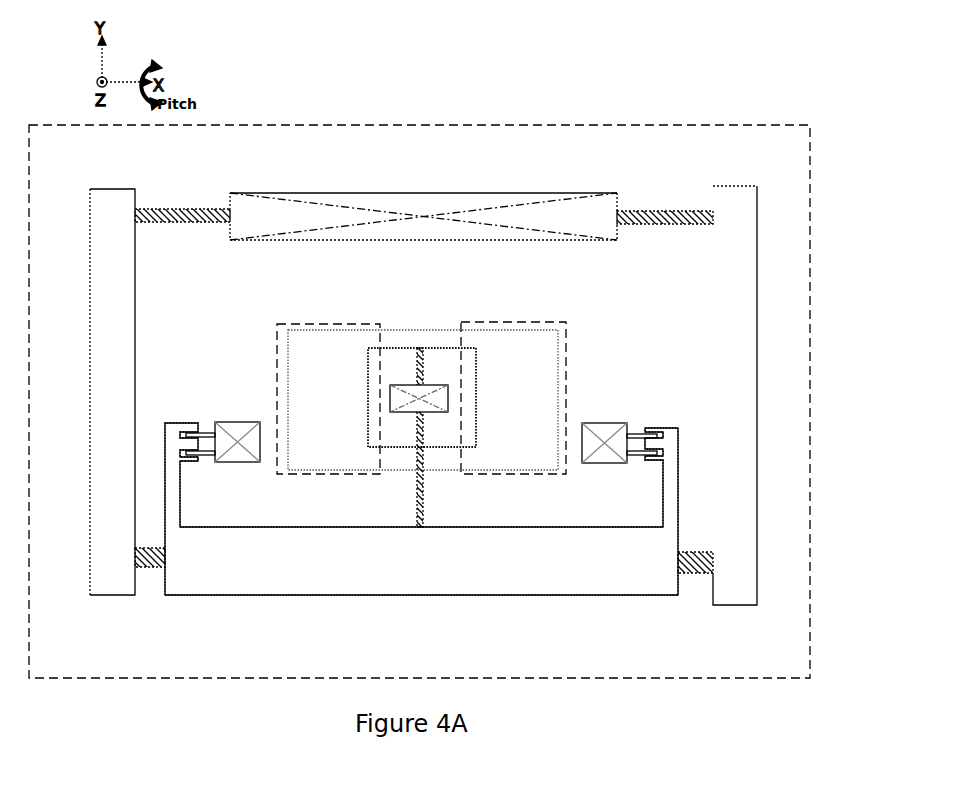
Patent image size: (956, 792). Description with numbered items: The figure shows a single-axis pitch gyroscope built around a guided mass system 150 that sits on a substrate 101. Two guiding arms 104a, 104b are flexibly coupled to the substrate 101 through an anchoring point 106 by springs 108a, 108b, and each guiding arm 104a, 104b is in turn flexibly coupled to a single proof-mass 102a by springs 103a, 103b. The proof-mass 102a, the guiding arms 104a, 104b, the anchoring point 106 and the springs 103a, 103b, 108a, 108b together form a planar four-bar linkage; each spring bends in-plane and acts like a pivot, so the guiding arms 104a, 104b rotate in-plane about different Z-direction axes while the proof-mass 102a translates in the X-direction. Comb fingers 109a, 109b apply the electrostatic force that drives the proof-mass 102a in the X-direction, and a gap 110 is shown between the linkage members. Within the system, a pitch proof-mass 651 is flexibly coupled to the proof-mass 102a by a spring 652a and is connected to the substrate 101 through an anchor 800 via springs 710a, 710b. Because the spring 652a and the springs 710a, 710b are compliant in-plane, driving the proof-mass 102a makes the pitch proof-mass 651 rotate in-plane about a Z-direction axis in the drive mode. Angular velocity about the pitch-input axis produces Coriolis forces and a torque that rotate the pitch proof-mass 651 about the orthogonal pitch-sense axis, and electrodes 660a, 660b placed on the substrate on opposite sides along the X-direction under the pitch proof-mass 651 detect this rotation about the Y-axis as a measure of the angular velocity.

The substrate 101 is at (783, 123).
The proof-mass 102a is at (617, 597).
The spring 103a is at (147, 568).
The spring 103b is at (700, 575).
The guiding arm 104a is at (90, 287).
The guiding arm 104b is at (758, 310).
The anchoring point 106 is at (432, 193).
The spring 108a is at (193, 209).
The spring 108b is at (643, 212).
The comb fingers 109a is at (247, 465).
The comb fingers 109b is at (613, 467).
The gap 110 is at (587, 288).
The guided mass system 150 is at (426, 708).
The pitch proof-mass 651 is at (541, 402).
The spring 652a is at (422, 497).
The electrode 660a is at (277, 388).
The electrode 660b is at (565, 363).
The spring 710a is at (417, 378).
The spring 710b is at (417, 442).
The anchor 800 is at (433, 385).